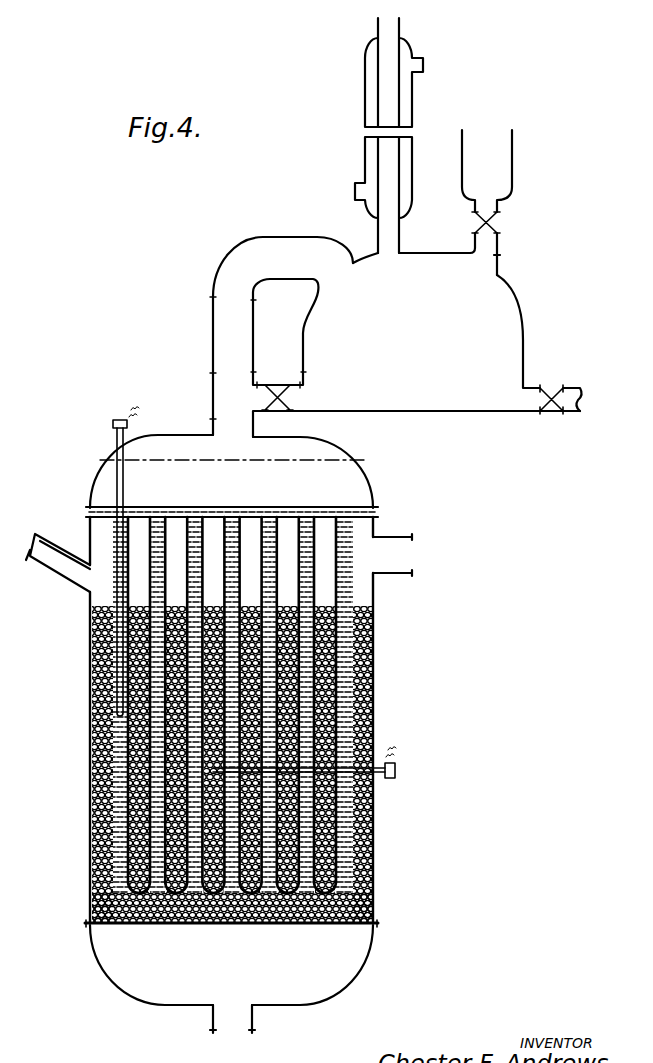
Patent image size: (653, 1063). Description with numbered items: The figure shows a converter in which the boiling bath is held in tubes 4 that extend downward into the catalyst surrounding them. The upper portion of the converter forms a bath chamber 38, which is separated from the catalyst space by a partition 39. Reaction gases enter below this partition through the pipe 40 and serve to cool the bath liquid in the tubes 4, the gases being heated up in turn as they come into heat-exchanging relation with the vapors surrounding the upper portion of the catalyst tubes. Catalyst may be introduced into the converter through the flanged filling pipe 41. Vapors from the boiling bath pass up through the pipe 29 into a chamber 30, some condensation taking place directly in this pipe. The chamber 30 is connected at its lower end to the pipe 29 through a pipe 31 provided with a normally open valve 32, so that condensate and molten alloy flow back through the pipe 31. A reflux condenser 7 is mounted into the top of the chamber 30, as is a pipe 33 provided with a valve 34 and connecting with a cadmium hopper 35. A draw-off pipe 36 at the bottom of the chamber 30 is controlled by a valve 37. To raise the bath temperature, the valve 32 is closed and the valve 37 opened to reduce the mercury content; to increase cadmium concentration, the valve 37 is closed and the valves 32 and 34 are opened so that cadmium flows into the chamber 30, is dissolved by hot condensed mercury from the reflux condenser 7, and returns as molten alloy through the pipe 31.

The tubes 4 is at (375, 668).
The reflux condenser 7 is at (404, 108).
The central pipe 29 is at (230, 257).
The chamber 30 is at (516, 303).
The pipe 31 is at (345, 985).
The valve 32 is at (275, 412).
The pipe 33 is at (498, 256).
The valve 34 is at (500, 222).
The cadmium hopper 35 is at (513, 160).
The draw-off pipe 36 is at (528, 388).
The valve 37 is at (551, 414).
The bath chamber 38 is at (229, 688).
The partition 39 is at (378, 517).
The pipe 40 is at (397, 574).
The flanged filling pipe 41 is at (55, 535).